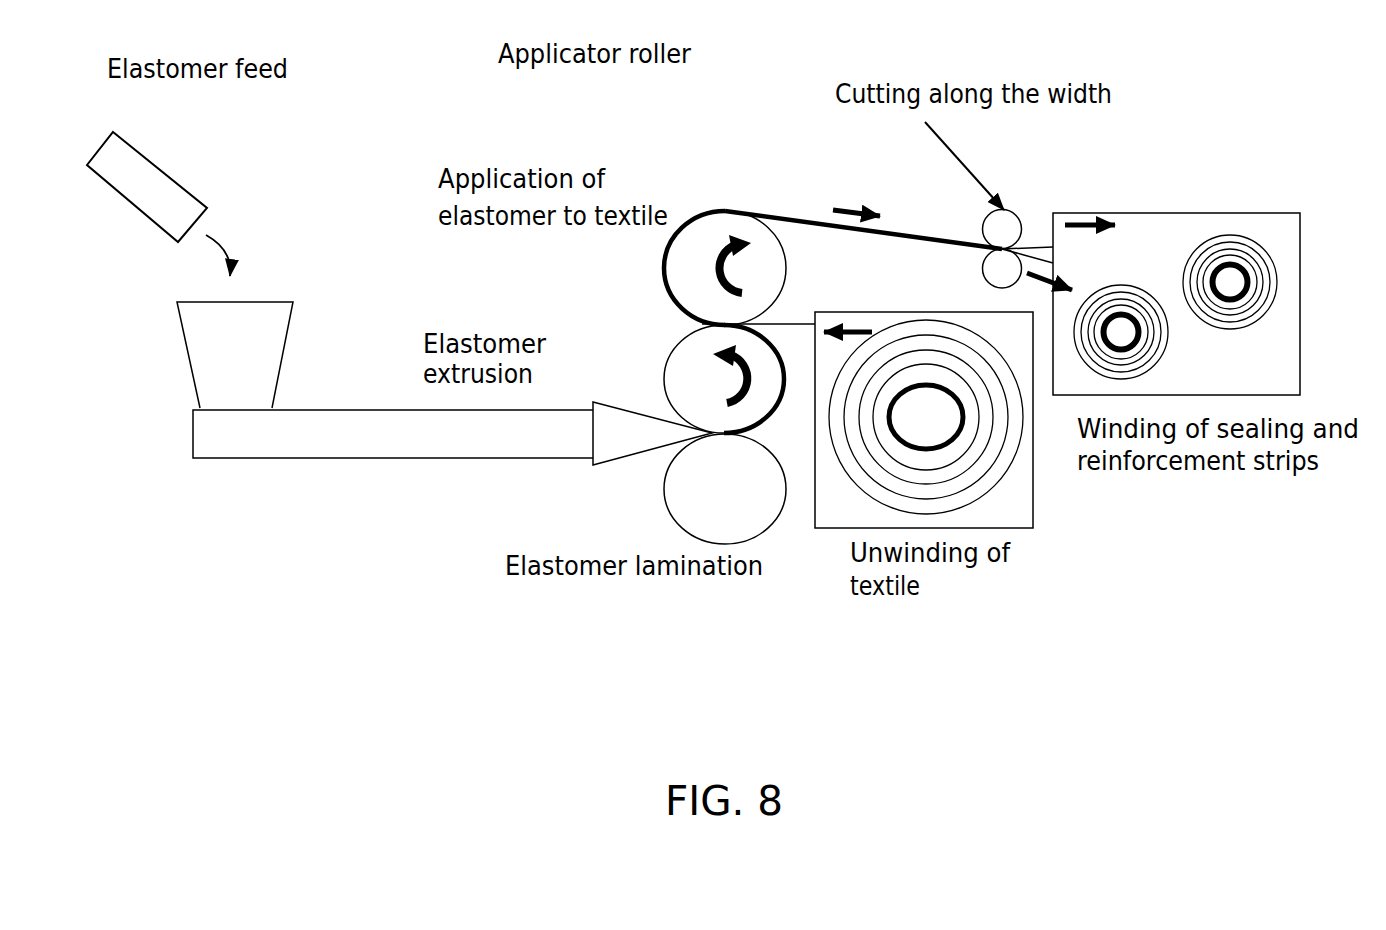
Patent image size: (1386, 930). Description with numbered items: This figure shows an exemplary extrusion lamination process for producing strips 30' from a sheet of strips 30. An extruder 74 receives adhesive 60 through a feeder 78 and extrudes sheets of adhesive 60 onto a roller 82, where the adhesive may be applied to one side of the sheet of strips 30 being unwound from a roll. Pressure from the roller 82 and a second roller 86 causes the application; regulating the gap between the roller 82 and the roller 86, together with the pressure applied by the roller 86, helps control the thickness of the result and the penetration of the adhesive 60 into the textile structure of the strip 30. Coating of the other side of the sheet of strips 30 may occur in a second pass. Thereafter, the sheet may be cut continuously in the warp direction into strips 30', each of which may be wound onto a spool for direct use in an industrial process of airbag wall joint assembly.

The adhesive 60 is at (179, 192).
The feeder 78 is at (198, 365).
The extruder 74 is at (329, 401).
The roller 86 is at (711, 206).
The strips 30' is at (863, 186).
The roller 82 is at (701, 373).
The sheet of strips 30 is at (766, 280).